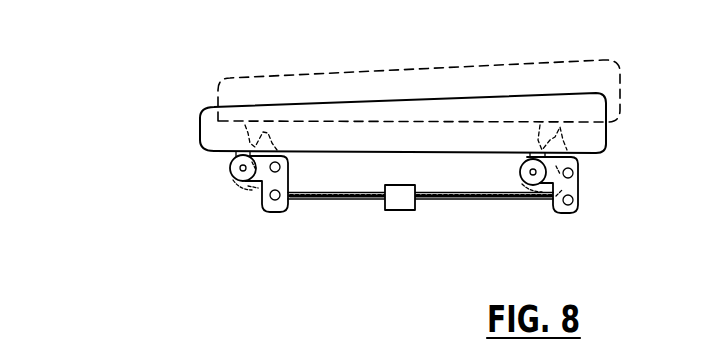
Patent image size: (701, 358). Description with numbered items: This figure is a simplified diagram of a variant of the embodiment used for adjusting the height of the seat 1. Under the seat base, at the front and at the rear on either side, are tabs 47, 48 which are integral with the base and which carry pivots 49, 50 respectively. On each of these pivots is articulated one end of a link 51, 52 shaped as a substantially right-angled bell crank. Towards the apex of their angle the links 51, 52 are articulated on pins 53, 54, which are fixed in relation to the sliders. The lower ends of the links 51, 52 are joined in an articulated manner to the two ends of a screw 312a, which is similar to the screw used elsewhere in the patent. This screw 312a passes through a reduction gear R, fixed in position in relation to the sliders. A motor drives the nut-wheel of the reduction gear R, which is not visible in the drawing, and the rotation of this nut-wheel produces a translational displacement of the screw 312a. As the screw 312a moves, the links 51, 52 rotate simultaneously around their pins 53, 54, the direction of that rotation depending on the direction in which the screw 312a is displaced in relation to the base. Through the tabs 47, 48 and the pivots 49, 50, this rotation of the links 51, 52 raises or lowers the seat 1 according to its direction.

The seat 1 is at (197, 125).
The tab 47 is at (534, 165).
The tab 48 is at (236, 158).
The pivot 49 is at (530, 193).
The pivot 50 is at (232, 178).
The link 51 is at (584, 204).
The link 52 is at (258, 202).
The pin 53 is at (574, 173).
The pin 54 is at (276, 162).
The screw 312a is at (335, 200).
The reduction gear R is at (398, 207).